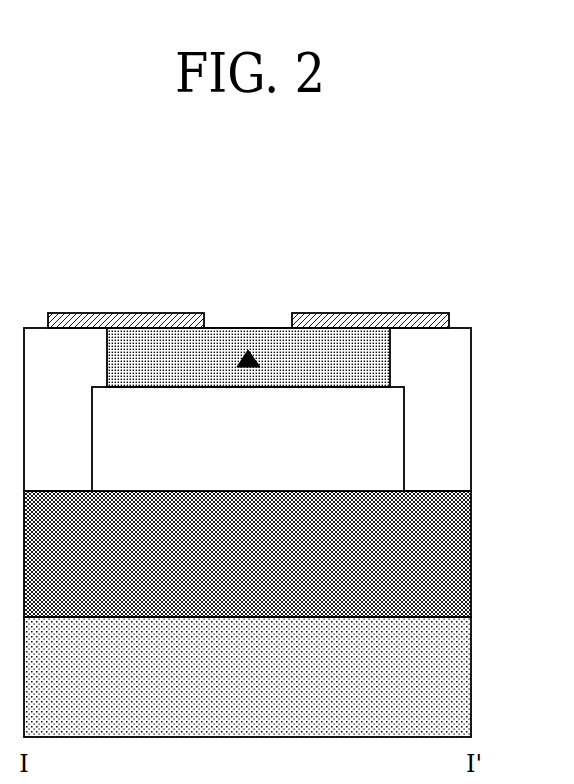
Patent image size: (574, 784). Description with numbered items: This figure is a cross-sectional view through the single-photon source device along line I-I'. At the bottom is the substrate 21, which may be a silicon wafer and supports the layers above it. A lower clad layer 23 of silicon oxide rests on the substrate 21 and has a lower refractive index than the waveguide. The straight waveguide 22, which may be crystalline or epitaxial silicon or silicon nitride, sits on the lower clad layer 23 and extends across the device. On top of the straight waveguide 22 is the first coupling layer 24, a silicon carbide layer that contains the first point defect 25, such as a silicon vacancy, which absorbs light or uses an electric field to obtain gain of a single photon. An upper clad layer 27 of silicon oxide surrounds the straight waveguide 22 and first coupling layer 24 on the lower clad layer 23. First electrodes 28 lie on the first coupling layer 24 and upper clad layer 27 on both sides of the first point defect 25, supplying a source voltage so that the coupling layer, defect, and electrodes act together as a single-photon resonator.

The substrate 21 is at (463, 675).
The straight waveguide 22 is at (387, 450).
The lower clad layer 23 is at (463, 557).
The first coupling layer 24 is at (372, 361).
The first point defect 25 is at (247, 343).
The upper clad layer 27 is at (462, 404).
The first electrodes 28 is at (450, 317).